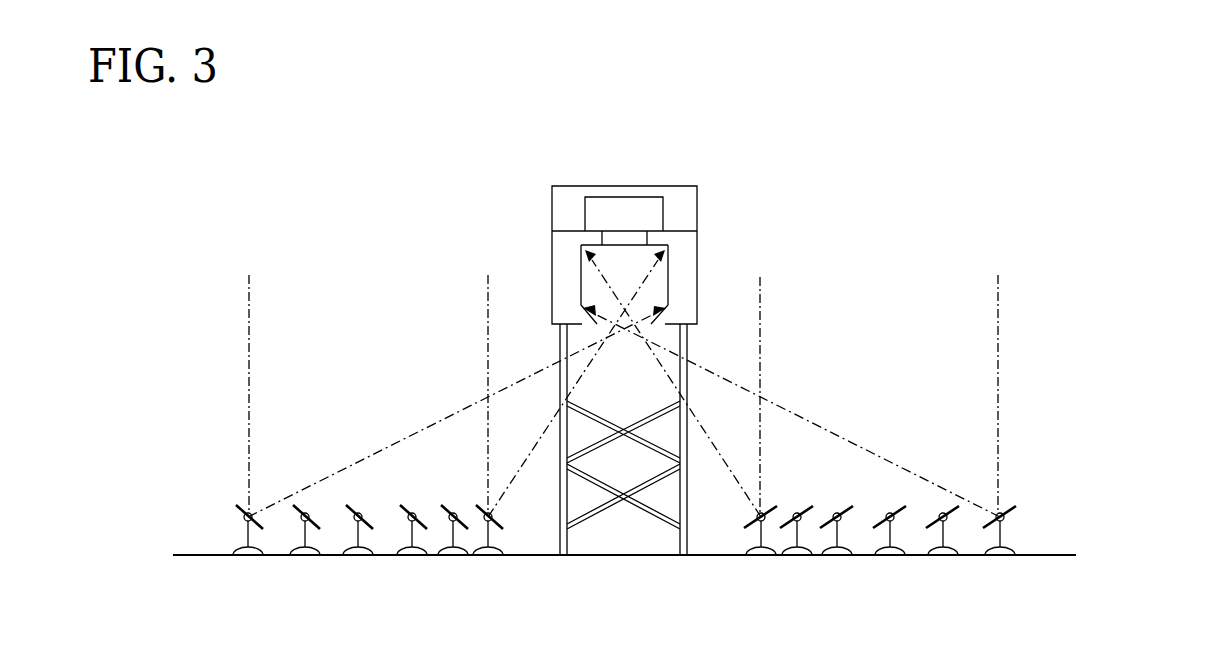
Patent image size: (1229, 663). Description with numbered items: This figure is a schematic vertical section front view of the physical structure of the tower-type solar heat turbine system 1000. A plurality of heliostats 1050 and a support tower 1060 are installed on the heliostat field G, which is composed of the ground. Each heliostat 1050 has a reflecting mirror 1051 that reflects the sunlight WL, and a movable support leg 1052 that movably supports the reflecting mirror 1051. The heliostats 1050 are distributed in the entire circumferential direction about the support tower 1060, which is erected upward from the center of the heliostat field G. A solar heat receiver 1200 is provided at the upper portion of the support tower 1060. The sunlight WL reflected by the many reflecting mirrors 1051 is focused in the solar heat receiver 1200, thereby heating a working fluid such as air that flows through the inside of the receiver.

The solar heat turbine system 1000 is at (928, 116).
The solar heat receiver 1200 is at (660, 278).
The support tower 1060 is at (688, 473).
The heliostat 1050 is at (1125, 442).
The reflecting mirror 1051 is at (1008, 508).
The movable support leg 1052 is at (1003, 531).
The sunlight WL is at (247, 300).
The heliostat field G is at (210, 553).